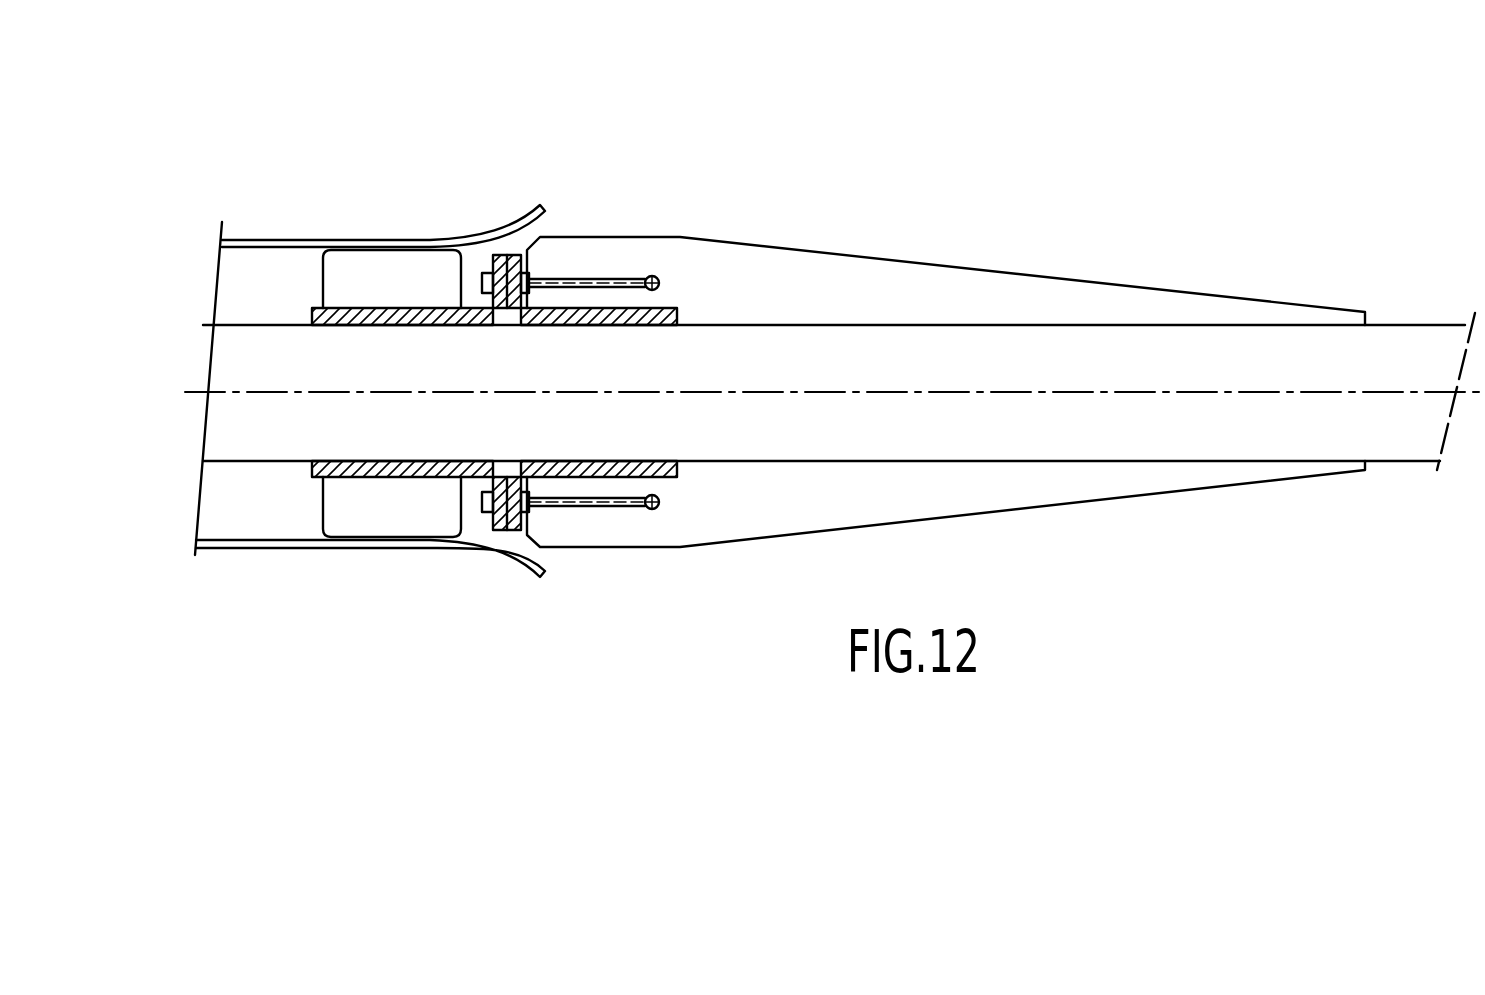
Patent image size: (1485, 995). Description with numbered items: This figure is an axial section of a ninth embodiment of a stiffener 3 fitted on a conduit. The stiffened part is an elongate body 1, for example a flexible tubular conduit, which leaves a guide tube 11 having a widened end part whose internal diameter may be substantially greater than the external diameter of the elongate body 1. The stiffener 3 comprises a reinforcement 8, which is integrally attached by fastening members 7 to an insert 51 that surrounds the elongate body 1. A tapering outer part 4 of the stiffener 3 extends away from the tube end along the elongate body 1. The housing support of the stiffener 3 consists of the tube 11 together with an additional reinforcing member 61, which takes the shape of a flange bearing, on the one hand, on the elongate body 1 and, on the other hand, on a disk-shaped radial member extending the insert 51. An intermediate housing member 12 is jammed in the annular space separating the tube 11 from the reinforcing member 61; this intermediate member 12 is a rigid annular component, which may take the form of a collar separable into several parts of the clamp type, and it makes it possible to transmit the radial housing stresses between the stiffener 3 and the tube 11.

The elongate body 1 is at (1422, 322).
The stiffener 3 is at (721, 173).
The housing 4 is at (850, 262).
The fastening members 7 is at (485, 508).
The reinforcement 8 is at (630, 272).
The guide tube 11 is at (288, 242).
The intermediate housing member 12 is at (320, 275).
The insert 51 is at (618, 327).
The reinforcing member 61 is at (397, 325).